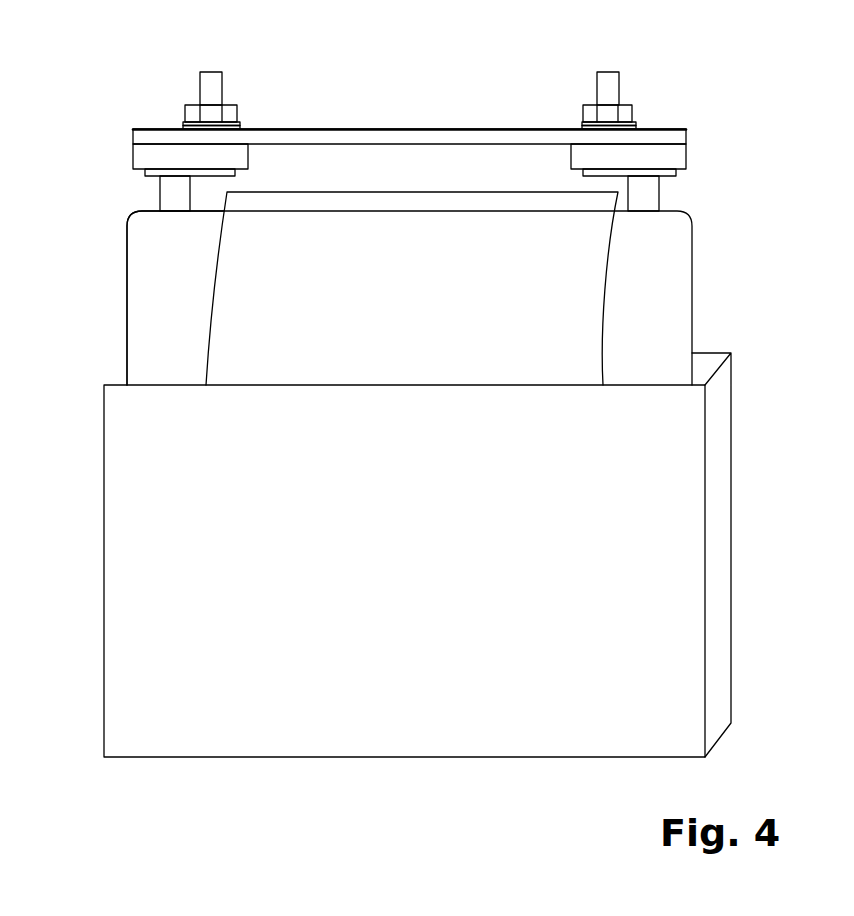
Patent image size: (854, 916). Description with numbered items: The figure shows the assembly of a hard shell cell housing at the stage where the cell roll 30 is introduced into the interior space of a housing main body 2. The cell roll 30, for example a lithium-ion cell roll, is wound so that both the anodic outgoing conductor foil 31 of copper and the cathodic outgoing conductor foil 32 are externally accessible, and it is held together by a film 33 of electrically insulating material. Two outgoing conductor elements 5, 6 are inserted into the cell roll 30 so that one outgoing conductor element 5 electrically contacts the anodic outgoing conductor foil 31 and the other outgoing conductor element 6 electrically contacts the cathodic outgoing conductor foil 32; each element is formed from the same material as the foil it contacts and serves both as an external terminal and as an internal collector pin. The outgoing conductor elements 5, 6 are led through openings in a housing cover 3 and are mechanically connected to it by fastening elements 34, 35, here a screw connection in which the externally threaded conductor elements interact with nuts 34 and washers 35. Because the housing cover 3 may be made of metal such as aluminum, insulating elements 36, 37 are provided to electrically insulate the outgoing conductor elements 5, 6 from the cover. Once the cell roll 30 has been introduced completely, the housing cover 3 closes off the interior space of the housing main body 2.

The housing main body 2 is at (719, 453).
The housing cover 3 is at (337, 138).
The outgoing conductor element 5 is at (213, 72).
The outgoing conductor element 6 is at (608, 76).
The cell roll 30 is at (104, 226).
The anodic outgoing conductor foil 31 is at (147, 332).
The cathodic outgoing conductor foil 32 is at (683, 303).
The film 33 is at (563, 268).
The fastening element 34 is at (620, 112).
The fastening element 35 is at (183, 122).
The insulating element 36 is at (183, 127).
The insulating element 37 is at (145, 162).